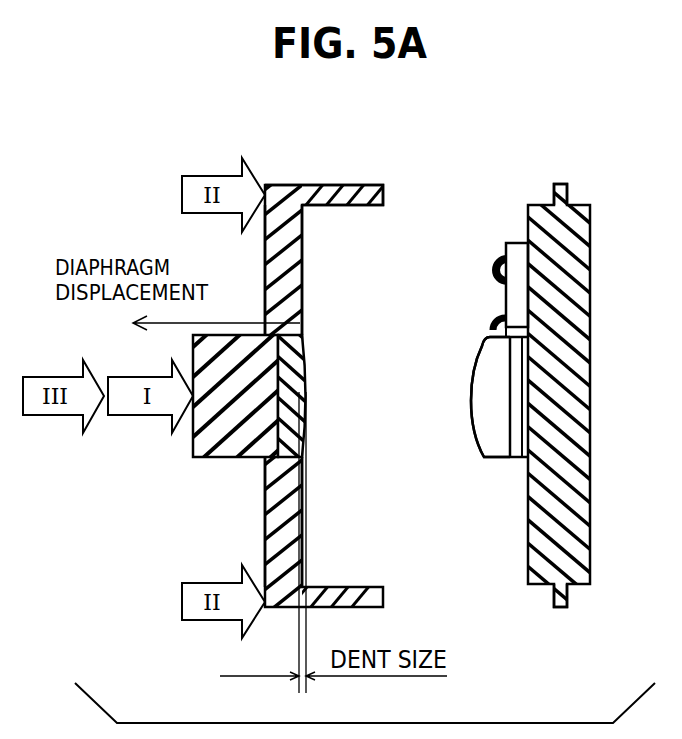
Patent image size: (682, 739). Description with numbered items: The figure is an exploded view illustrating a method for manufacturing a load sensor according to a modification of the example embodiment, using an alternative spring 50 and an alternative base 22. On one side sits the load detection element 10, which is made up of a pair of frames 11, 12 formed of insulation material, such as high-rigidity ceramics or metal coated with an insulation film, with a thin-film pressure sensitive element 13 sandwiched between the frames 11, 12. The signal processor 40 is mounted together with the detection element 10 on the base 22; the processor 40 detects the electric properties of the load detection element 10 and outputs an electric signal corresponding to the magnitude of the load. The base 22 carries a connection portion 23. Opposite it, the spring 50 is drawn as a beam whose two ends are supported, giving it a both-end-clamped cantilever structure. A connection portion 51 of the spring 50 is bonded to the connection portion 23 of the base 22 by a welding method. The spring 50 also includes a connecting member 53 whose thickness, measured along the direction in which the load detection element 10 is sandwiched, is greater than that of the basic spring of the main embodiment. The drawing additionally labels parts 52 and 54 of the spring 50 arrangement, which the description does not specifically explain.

The load detection element 10 is at (452, 446).
The frame 11 is at (496, 459).
The frame 12 is at (522, 459).
The pressure sensitive element 13 is at (513, 459).
The base 22 is at (580, 392).
The connection portion 23 is at (566, 192).
The signal processor 40 is at (507, 246).
The spring 50 is at (340, 166).
The connection portion 51 is at (383, 195).
The pressing portion 52 is at (306, 357).
The connecting member 53 is at (302, 270).
The pressing block 54 is at (242, 450).